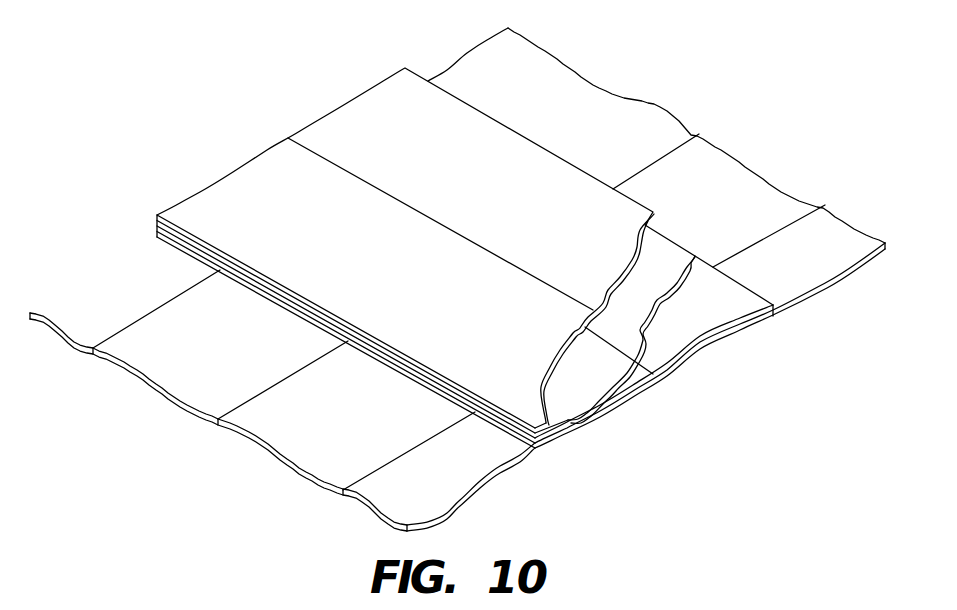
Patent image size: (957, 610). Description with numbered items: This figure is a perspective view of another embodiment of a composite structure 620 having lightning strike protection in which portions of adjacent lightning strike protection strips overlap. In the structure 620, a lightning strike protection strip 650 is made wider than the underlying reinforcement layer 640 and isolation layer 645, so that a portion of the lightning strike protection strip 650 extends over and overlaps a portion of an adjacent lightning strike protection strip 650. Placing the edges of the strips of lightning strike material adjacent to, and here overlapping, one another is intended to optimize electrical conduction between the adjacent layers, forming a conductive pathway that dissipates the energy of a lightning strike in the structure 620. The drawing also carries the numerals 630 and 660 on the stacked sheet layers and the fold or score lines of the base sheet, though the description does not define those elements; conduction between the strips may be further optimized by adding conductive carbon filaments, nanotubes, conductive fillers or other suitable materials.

The structure 620 is at (267, 133).
The sheet ply 630 is at (200, 193).
The reinforcement layer 640 is at (700, 320).
The isolation layer 645 is at (648, 251).
The lightning strike protection strip 650 is at (577, 175).
The fold line of base sheet 660 is at (630, 110).